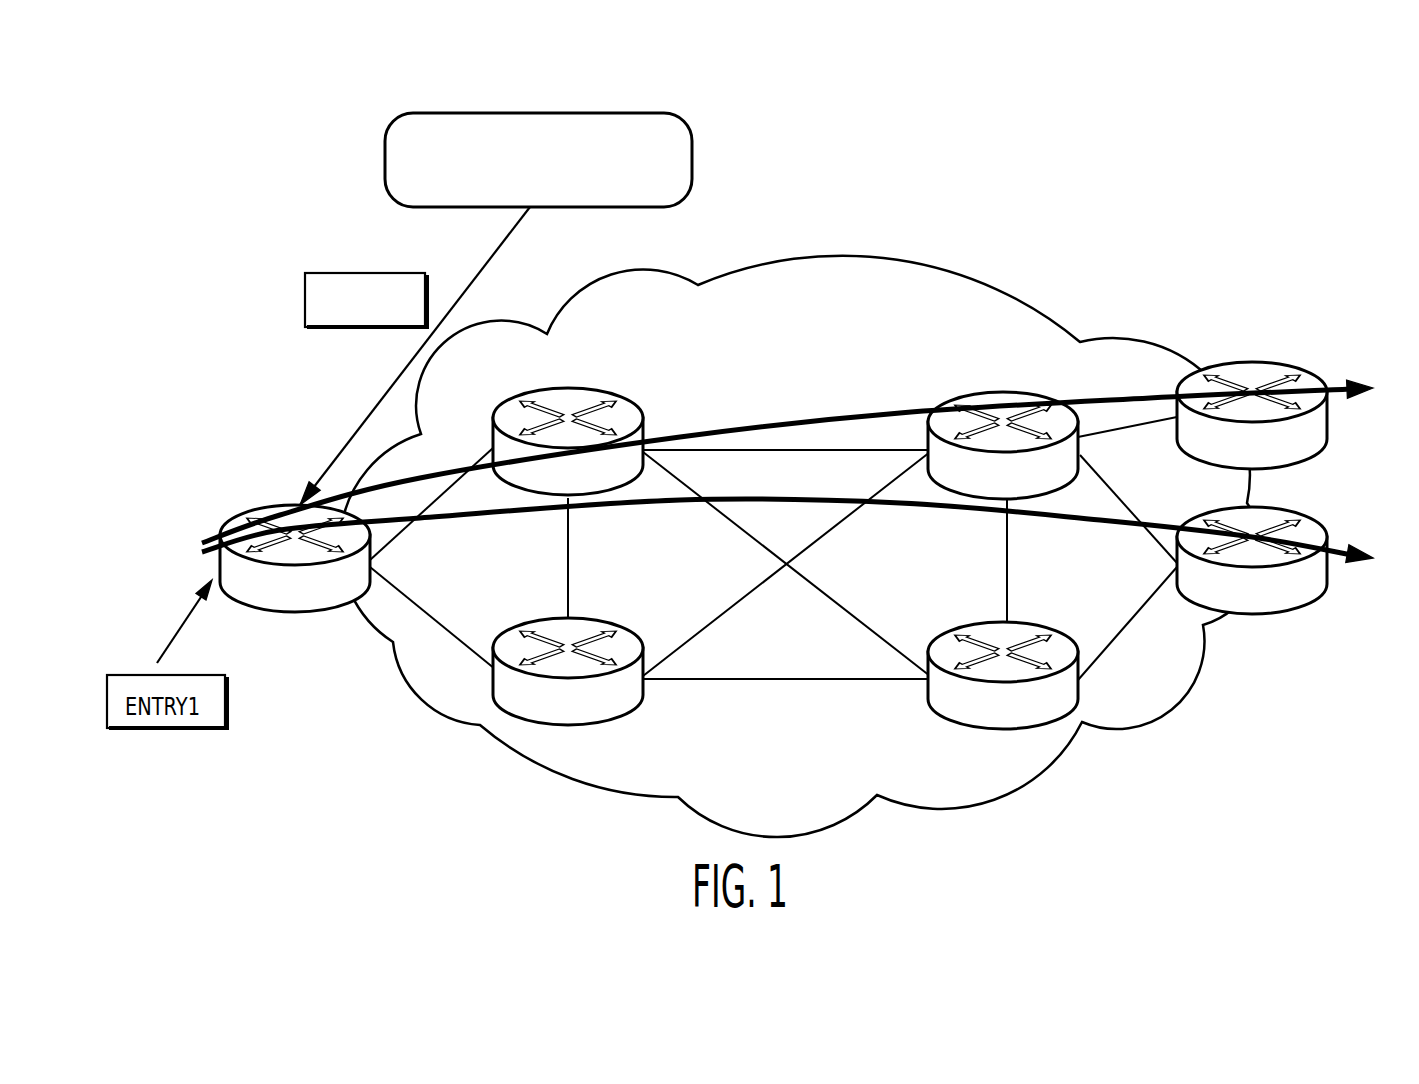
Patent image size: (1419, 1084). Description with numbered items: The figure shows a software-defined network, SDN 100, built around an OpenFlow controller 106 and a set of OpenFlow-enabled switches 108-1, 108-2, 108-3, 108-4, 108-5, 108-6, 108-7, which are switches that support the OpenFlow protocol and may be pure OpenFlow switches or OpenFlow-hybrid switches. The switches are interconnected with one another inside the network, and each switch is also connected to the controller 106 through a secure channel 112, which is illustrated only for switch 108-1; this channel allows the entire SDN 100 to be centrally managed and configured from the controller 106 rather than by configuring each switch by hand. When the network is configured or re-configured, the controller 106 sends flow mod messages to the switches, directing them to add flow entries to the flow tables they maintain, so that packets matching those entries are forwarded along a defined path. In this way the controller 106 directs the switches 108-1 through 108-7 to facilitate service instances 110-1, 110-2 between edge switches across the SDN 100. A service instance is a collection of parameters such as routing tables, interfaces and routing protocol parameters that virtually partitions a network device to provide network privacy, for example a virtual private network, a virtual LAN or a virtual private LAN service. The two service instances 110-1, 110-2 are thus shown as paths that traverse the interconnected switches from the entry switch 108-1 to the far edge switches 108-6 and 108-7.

The SDN 100 is at (1125, 165).
The OpenFlow controller 106 is at (692, 157).
The secure channel 112 is at (474, 280).
The OpenFlow-enabled switch 108-1 is at (300, 612).
The OpenFlow-enabled switch 108-2 is at (633, 404).
The OpenFlow-enabled switch 108-3 is at (621, 728).
The OpenFlow-enabled switch 108-4 is at (1080, 450).
The OpenFlow-enabled switch 108-5 is at (953, 727).
The OpenFlow-enabled switch 108-6 is at (1263, 358).
The OpenFlow-enabled switch 108-7 is at (1270, 613).
The service instance 110-1 is at (1382, 380).
The service instance 110-2 is at (1362, 563).